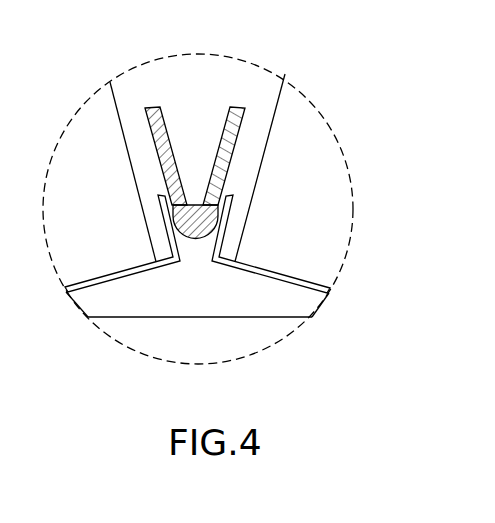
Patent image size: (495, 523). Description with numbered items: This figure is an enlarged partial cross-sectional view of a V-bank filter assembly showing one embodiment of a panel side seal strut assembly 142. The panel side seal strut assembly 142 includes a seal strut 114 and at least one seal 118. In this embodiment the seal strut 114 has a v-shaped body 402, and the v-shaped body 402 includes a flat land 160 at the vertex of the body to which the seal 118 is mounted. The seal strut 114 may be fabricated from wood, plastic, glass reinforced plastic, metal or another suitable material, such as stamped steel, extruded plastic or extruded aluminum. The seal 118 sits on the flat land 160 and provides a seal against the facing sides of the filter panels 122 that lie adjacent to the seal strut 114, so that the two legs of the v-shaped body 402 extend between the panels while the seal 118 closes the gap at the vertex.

The seal strut 114 is at (266, 137).
The v-shaped body 402 is at (240, 138).
The flat land 160 is at (193, 203).
The seal 118 is at (224, 236).
The filter panels 122 is at (332, 198).
The panel side seal strut assembly 142 is at (348, 163).